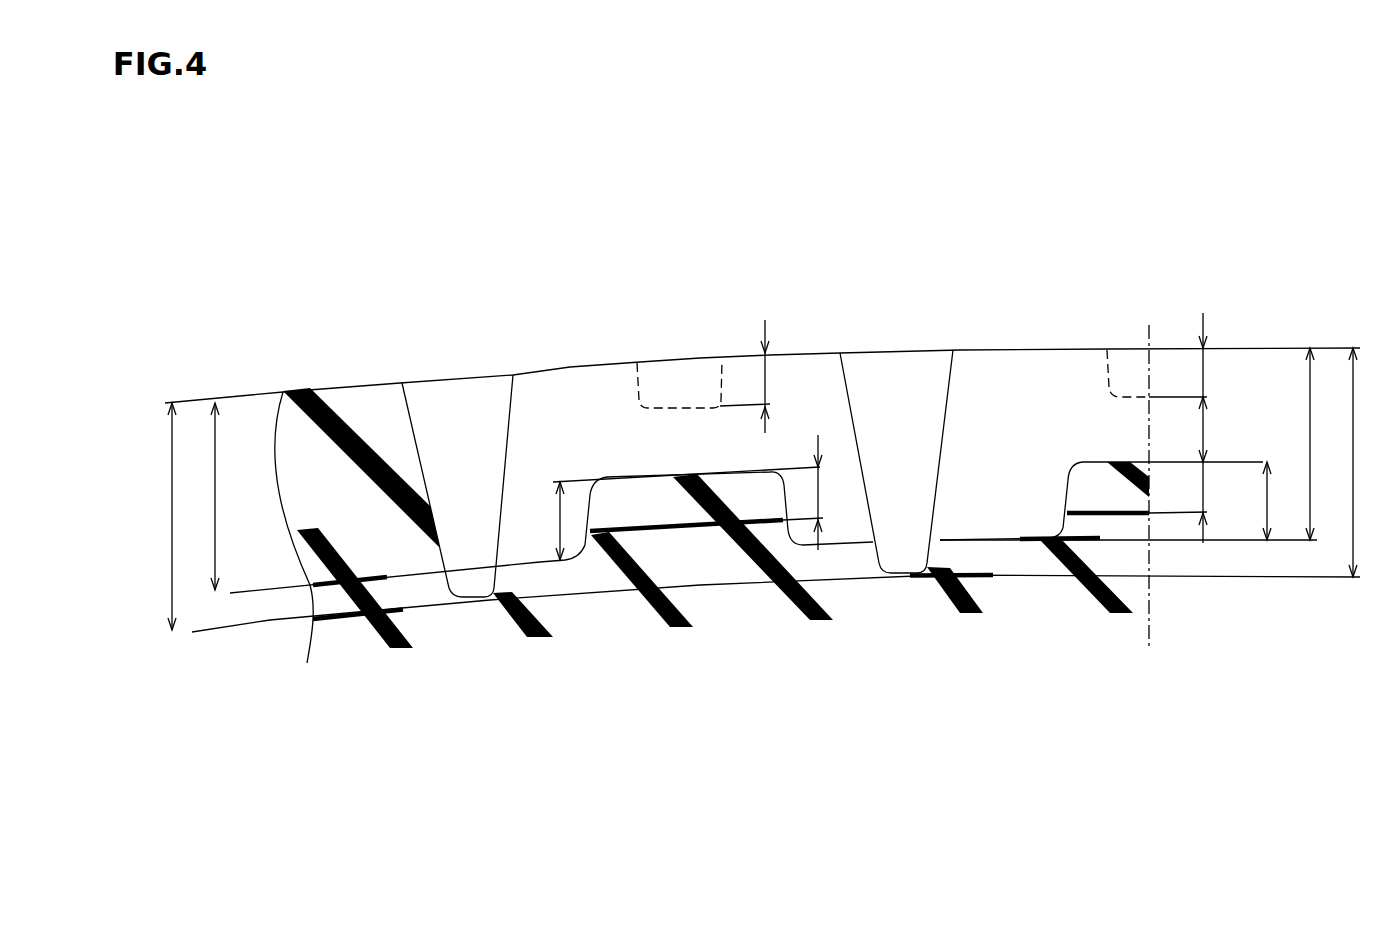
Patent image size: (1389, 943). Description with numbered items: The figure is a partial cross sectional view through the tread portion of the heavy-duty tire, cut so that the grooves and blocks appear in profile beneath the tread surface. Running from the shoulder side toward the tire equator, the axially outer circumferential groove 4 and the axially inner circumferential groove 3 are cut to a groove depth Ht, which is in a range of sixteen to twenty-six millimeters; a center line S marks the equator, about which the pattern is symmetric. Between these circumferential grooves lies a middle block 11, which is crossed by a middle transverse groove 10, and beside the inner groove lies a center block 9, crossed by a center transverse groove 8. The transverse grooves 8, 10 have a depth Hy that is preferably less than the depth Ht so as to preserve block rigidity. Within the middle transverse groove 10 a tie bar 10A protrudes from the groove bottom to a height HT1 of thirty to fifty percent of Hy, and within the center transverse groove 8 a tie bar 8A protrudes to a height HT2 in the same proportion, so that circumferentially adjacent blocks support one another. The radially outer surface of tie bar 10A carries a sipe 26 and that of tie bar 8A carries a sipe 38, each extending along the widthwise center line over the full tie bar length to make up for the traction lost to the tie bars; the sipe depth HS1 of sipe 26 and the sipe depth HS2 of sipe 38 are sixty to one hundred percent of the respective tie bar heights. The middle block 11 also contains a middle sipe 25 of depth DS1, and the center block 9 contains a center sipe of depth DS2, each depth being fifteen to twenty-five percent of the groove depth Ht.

The axially inner circumferential groove 3 is at (893, 378).
The axially outer circumferential groove 4 is at (455, 400).
The center transverse groove 8 is at (978, 545).
The tie bar 8A is at (1120, 468).
The center block 9 is at (1037, 347).
The middle transverse groove 10 is at (523, 560).
The tie bar 10A is at (657, 468).
The middle block 11 is at (647, 357).
The middle sipe 25 is at (680, 407).
The sipe 26 is at (658, 523).
The sipe 38 is at (1090, 507).
The tire equator / center line S is at (1087, 347).
The groove depth of circumferential grooves Ht is at (768, 489).
The groove depth of transverse grooves Hy is at (769, 470).
The tie bar height HT1 is at (679, 513).
The sipe depth HS1 is at (813, 492).
The depth of middle sipe DS1 is at (755, 376).
The depth of center sipe DS2 is at (1201, 428).
The depth of sipe HS2 is at (1200, 487).
The tie bar height HT2 is at (1266, 501).